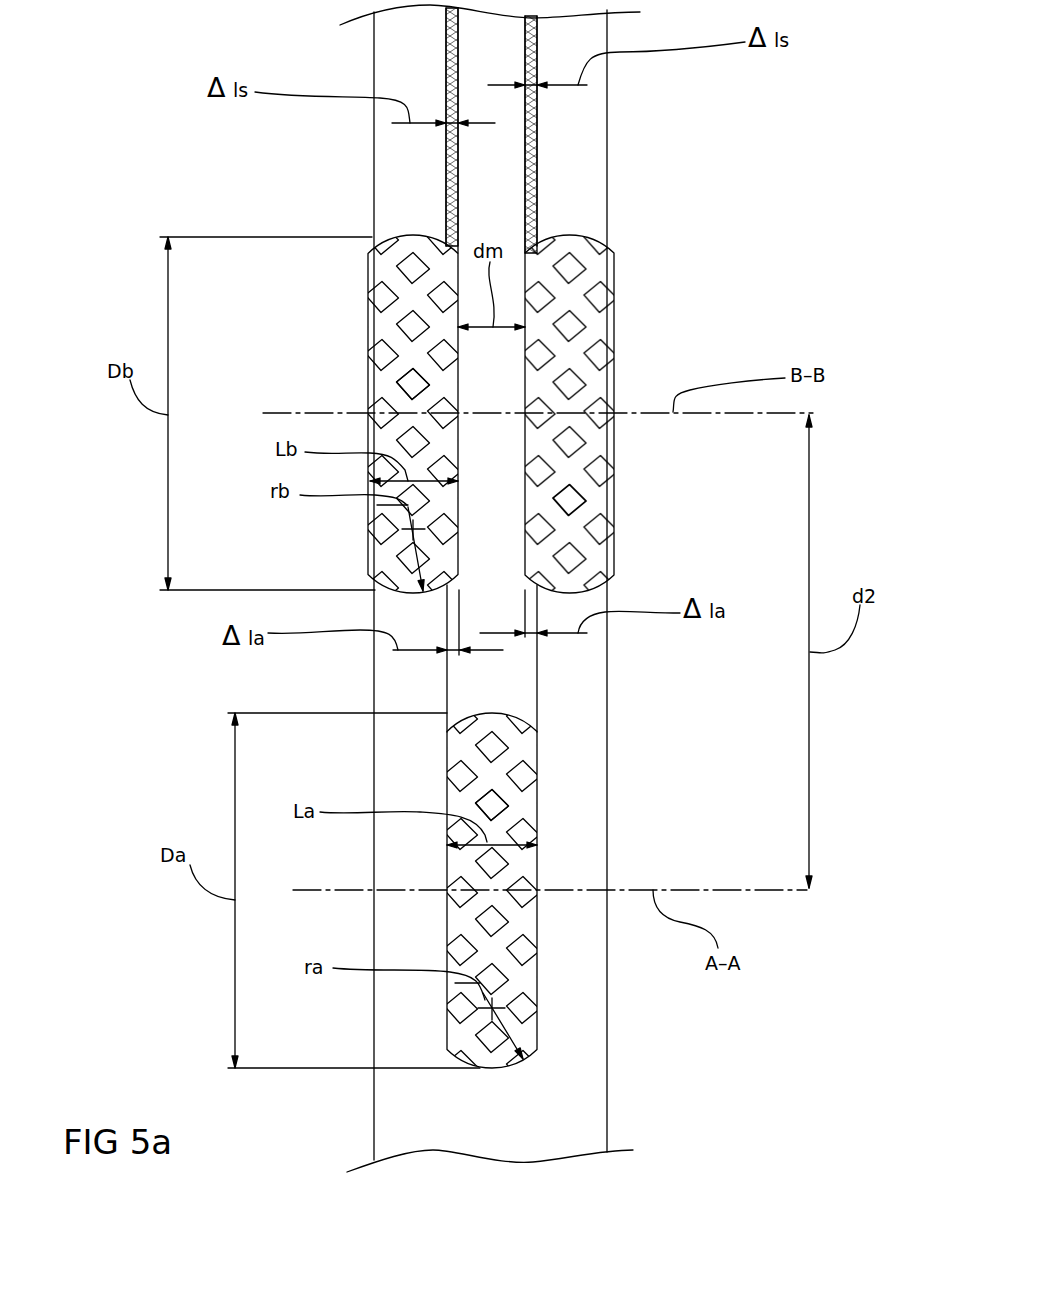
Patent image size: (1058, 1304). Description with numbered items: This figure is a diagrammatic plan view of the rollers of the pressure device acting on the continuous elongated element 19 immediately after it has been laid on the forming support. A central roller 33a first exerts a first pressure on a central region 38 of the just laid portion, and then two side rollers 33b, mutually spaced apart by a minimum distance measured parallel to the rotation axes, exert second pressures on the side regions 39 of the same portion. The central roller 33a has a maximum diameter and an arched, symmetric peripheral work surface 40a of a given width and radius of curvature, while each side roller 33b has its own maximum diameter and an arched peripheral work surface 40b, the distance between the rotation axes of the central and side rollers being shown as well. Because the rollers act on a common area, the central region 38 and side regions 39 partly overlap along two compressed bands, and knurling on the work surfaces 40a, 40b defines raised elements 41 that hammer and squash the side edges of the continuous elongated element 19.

The continuous elongated element 19 is at (568, 1108).
The side regions 39 is at (410, 57).
The side rollers 33b is at (516, 384).
The peripheral work surface of side roller 40b is at (383, 270).
The raised elements 41 is at (413, 387).
The central region 38 is at (503, 687).
The central roller 33a is at (591, 890).
The peripheral work surface of central roller 40a is at (497, 772).